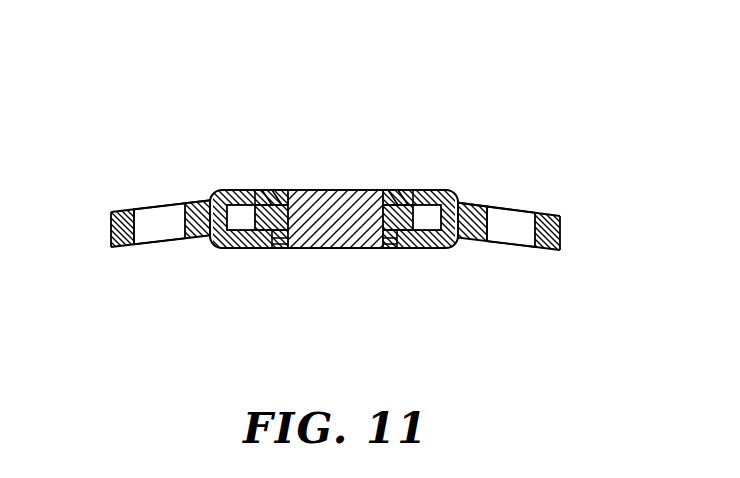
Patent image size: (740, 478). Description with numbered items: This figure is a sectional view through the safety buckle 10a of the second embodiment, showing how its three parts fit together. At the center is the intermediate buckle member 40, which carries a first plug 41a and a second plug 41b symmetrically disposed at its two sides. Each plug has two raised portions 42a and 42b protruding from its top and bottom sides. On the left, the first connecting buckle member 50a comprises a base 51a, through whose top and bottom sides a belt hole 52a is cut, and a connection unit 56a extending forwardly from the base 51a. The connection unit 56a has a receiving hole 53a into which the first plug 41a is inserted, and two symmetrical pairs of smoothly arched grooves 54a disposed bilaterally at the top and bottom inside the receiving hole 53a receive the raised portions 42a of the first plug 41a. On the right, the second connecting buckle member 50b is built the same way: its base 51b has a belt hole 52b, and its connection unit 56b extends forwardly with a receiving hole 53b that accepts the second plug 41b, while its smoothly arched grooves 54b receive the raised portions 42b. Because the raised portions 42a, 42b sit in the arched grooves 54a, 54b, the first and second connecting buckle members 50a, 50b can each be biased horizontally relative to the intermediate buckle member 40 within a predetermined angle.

The safety buckle 10a is at (330, 97).
The intermediate buckle member 40 is at (356, 223).
The first plug 41a is at (240, 220).
The second plug 41b is at (424, 215).
The raised portions 42a is at (285, 195).
The raised portions 42b is at (388, 195).
The first connecting buckle member 50a is at (177, 228).
The second connecting buckle member 50b is at (516, 232).
The base 51a is at (117, 209).
The base 51b is at (551, 214).
The belt hole 52a is at (155, 218).
The belt hole 52b is at (510, 215).
The receiving hole 53a is at (214, 200).
The receiving hole 53b is at (447, 203).
The smoothly arched grooves 54a is at (300, 203).
The smoothly arched grooves 54b is at (360, 192).
The connection unit 56a is at (204, 201).
The connection unit 56b is at (470, 204).